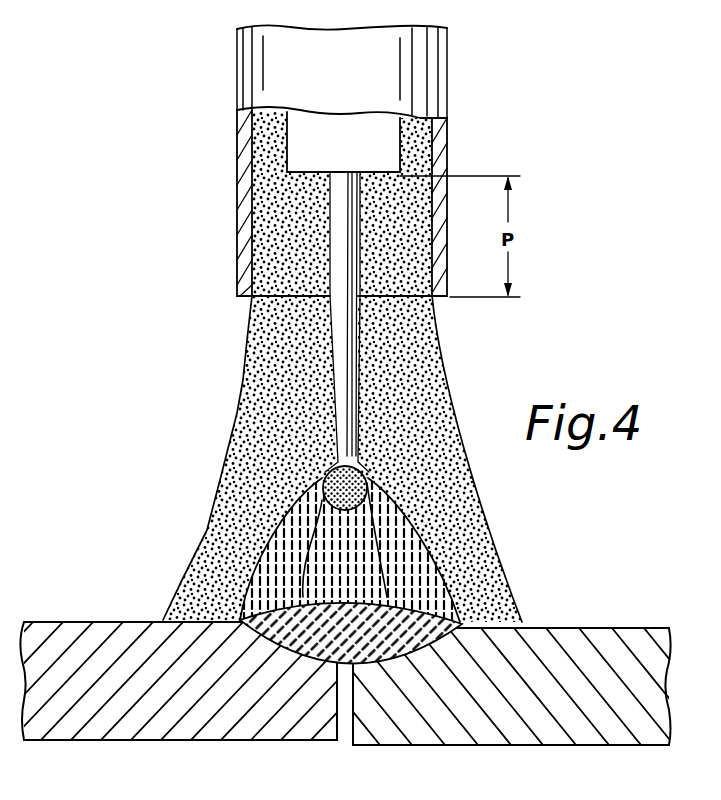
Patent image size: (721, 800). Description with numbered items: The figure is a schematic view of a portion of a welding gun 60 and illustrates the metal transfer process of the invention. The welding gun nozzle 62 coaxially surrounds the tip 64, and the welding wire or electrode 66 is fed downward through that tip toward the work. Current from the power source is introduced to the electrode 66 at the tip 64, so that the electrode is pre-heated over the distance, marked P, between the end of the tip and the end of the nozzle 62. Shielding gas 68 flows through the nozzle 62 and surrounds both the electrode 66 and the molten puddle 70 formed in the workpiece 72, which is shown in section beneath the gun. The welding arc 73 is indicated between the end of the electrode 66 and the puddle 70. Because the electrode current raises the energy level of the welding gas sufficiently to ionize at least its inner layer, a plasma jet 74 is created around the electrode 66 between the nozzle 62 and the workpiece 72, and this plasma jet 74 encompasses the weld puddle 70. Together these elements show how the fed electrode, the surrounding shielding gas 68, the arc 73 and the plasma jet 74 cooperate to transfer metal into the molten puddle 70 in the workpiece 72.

The welding gun 60 is at (237, 74).
The welding gun nozzle 62 is at (247, 222).
The tip 64 is at (293, 146).
The welding wire or electrode 66 is at (345, 262).
The shielding gas 68 is at (287, 296).
The molten puddle 70 is at (450, 613).
The workpiece 72 is at (108, 632).
The welding arc 73 is at (315, 550).
The plasma jet 74 is at (422, 572).